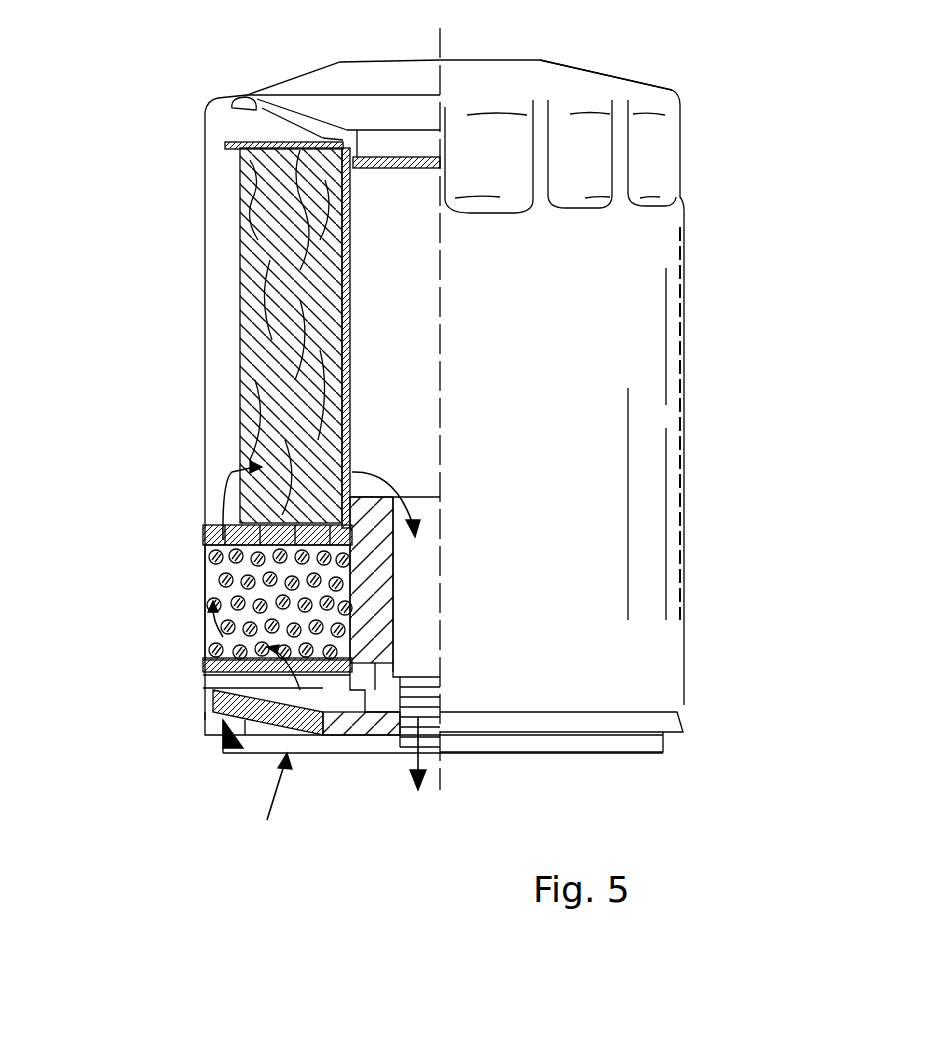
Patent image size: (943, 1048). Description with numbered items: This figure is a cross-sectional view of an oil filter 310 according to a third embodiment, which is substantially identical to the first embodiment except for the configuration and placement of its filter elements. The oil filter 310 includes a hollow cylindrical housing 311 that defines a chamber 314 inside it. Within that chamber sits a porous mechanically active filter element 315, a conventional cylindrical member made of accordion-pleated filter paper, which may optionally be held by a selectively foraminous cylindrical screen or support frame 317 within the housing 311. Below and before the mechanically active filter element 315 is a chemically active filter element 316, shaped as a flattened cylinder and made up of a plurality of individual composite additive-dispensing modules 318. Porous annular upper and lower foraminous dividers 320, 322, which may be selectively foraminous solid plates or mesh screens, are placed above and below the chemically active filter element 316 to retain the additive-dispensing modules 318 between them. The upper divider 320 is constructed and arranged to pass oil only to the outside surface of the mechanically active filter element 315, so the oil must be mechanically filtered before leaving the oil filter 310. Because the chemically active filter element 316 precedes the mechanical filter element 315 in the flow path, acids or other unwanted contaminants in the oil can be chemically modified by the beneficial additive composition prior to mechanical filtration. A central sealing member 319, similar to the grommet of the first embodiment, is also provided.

The oil filter 310 is at (703, 110).
The hollow cylindrical housing 311 is at (546, 406).
The chamber 314 is at (208, 331).
The mechanically active filter element 315 is at (240, 247).
The chemically active filter element 316 is at (203, 567).
The support frame 317 is at (258, 132).
The additive-dispensing modules 318 is at (203, 655).
The central sealing member 319 is at (377, 450).
The upper foraminous divider 320 is at (204, 512).
The lower foraminous divider 322 is at (255, 668).